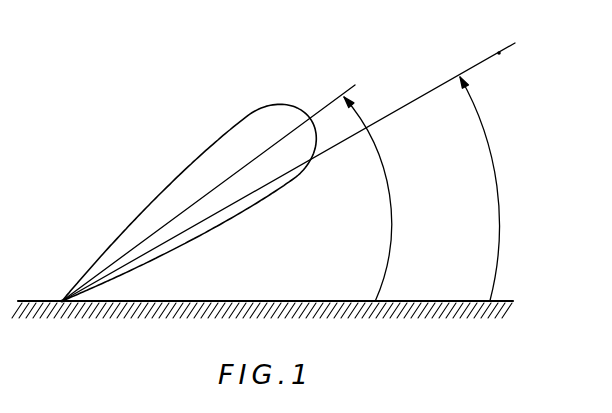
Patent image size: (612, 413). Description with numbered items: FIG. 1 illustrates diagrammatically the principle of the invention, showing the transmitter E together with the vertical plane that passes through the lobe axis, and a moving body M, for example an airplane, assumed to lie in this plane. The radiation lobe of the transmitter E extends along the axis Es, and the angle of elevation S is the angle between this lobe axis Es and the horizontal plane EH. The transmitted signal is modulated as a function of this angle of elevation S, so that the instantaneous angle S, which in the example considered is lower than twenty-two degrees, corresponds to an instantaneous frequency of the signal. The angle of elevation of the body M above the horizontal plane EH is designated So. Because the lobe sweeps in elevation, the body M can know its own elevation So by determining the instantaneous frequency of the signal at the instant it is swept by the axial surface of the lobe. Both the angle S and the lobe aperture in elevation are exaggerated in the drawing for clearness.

The transmitter E is at (54, 290).
The lobe axis direction s is at (208, 188).
The moving body M is at (288, 161).
The angle of elevation S is at (391, 220).
The angle of elevation of body M So is at (497, 182).
The horizontal plane H is at (273, 305).